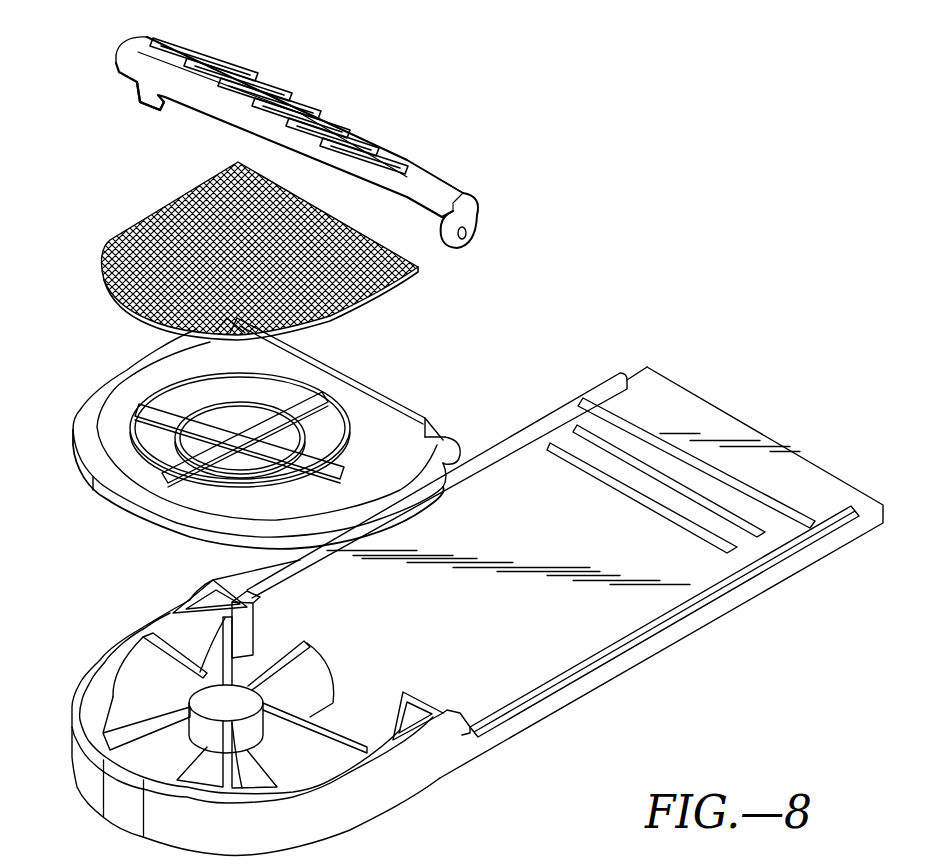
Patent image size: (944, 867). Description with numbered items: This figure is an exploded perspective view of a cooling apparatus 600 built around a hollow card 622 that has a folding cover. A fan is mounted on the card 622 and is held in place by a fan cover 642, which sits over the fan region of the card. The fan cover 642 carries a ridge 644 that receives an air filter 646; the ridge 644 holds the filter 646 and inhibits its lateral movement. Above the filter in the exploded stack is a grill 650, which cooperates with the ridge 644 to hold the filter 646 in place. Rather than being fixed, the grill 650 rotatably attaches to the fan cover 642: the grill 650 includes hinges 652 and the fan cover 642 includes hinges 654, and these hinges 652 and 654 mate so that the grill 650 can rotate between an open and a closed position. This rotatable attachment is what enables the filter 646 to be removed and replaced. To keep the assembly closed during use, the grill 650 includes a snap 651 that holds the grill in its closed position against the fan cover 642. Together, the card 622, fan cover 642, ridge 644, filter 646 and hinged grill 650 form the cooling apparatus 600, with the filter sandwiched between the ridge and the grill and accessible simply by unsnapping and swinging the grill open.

The cooling apparatus 600 is at (552, 292).
The hollow card 622 is at (640, 662).
The fan cover 642 is at (92, 415).
The ridge 644 is at (420, 432).
The air filter 646 is at (405, 292).
The grill 650 is at (455, 200).
The snap 651 is at (140, 106).
The hinges of the grill 652 is at (480, 233).
The hinges of the fan cover 654 is at (457, 447).